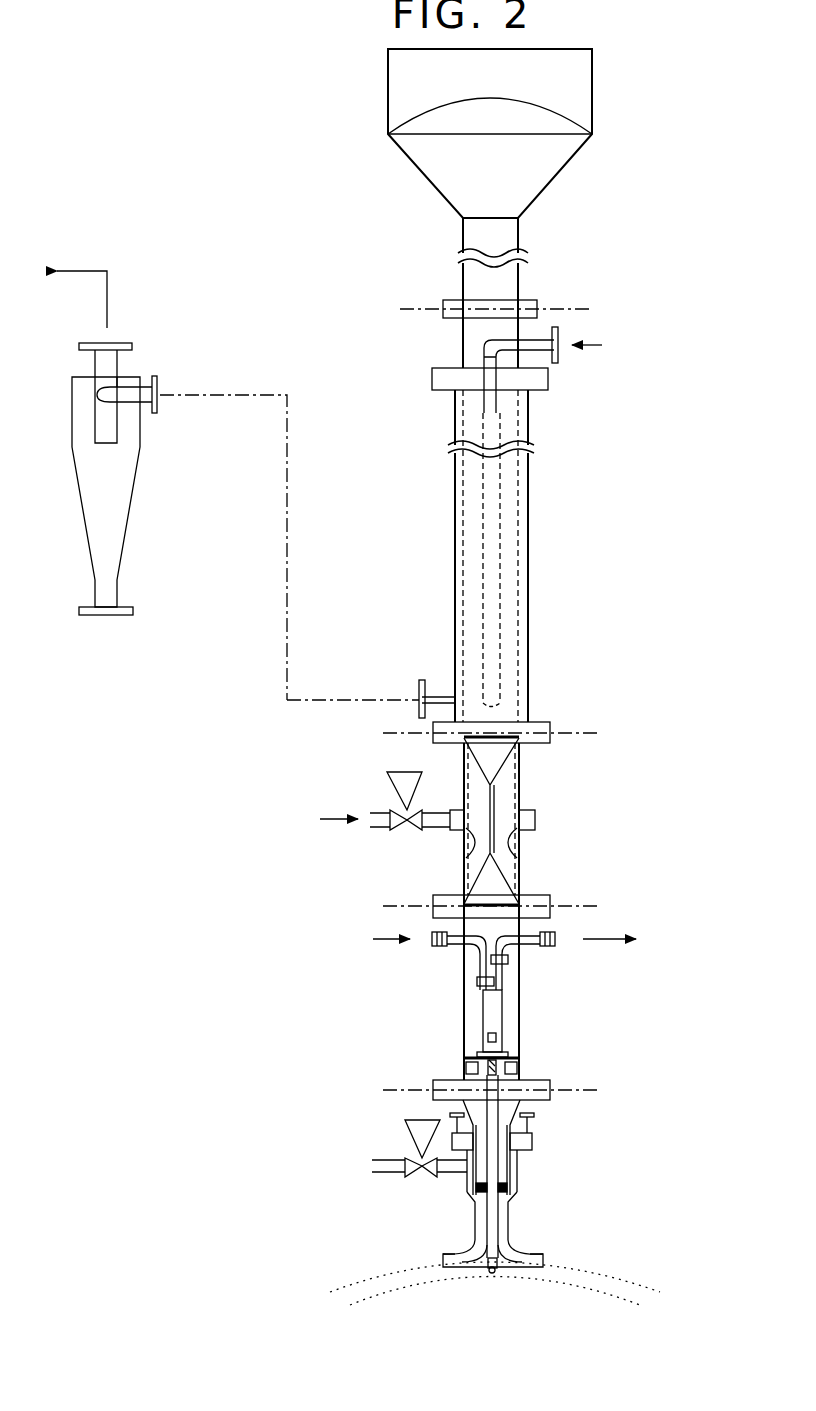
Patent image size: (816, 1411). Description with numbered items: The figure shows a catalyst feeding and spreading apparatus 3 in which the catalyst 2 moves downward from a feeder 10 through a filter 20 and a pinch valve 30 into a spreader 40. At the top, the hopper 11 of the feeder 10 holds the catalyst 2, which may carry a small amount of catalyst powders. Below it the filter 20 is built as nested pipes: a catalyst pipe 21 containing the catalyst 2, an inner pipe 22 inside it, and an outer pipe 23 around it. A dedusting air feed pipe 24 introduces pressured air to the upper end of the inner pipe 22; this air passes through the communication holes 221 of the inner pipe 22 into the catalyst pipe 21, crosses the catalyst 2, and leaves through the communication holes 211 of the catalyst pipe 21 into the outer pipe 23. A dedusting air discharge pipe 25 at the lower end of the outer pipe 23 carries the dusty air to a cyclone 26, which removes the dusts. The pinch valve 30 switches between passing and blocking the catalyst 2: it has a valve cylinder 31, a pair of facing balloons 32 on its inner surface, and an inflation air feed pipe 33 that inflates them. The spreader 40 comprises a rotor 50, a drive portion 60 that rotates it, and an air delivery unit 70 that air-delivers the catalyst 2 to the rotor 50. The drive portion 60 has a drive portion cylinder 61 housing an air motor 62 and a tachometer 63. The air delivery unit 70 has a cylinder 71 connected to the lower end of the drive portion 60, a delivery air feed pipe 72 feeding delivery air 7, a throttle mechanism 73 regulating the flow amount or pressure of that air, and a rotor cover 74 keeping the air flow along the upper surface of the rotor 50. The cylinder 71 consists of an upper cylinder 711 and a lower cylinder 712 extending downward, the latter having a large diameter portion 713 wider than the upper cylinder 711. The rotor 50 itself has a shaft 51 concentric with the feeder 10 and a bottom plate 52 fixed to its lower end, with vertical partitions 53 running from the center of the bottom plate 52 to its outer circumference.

The catalyst 2 is at (452, 100).
The powder supply apparatus 3 is at (635, 45).
The delivery air 7 is at (380, 1166).
The feeder 10 is at (430, 132).
The hopper 11 is at (388, 62).
The filter 20 is at (405, 412).
The catalyst pipe 21 is at (528, 418).
The inner pipe 22 is at (528, 506).
The outer pipe 23 is at (528, 538).
The dedusting air feed pipe 24 is at (540, 338).
The dedusting air discharge pipe 25 is at (440, 690).
The cyclone 26 is at (135, 378).
The pinch valve 30 is at (372, 752).
The valve cylinder 31 is at (519, 777).
The balloons 32 is at (460, 848).
The inflation air feed pipe 33 is at (378, 812).
The spreader 40 is at (322, 1030).
The rotor 50 is at (460, 1280).
The shaft 51 is at (496, 1233).
The bottom plate 52 is at (475, 1268).
The partitions 53 is at (518, 1254).
The drive portion 60 is at (430, 998).
The drive portion cylinder 61 is at (519, 985).
The air motor 62 is at (498, 1012).
The tachometer 63 is at (488, 1038).
The air delivery unit 70 is at (378, 1117).
The cylinder 71 is at (557, 1167).
The delivery air feed pipe 72 is at (395, 1160).
The throttle mechanism 73 is at (455, 1188).
The rotor cover 74 is at (535, 1258).
The communication holes 211 is at (528, 612).
The communication holes 221 is at (528, 680).
The upper cylinder 711 is at (523, 1113).
The lower cylinder 712 is at (515, 1206).
The large diameter portion 713 is at (523, 1183).